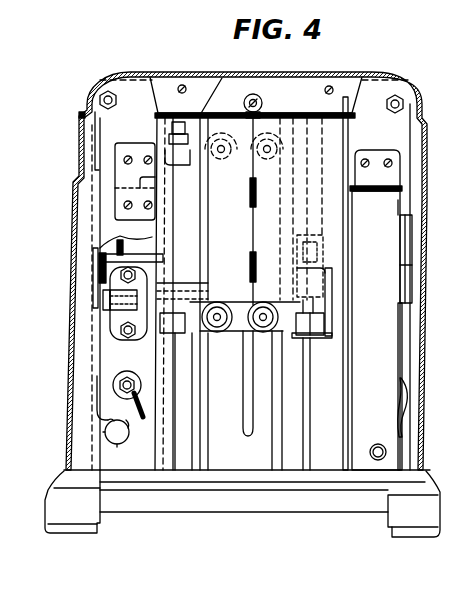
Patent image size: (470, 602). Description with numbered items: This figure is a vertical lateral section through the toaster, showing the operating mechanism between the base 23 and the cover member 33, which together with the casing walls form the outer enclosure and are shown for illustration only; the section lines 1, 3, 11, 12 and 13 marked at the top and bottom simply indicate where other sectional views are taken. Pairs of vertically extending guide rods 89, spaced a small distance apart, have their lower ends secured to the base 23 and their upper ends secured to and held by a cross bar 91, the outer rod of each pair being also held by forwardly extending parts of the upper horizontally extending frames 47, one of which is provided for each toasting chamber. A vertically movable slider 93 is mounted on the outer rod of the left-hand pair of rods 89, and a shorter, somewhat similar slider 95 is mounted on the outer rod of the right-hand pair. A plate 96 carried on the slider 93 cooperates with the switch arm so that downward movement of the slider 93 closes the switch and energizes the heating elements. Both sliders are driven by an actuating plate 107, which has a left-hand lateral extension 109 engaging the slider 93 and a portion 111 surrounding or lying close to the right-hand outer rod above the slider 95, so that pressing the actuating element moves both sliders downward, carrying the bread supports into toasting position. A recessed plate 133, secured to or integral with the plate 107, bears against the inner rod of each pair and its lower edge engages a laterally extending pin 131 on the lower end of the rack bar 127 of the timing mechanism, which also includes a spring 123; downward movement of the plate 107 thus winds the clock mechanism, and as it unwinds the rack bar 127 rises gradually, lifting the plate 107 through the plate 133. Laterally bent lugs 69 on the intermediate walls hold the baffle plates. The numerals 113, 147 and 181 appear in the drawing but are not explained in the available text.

The section line 1 is at (160, 113).
The section line 3 is at (96, 96).
The section line 11 is at (255, 116).
The section line 12 is at (334, 53).
The section line 13 is at (338, 35).
The base 23 is at (430, 483).
The cover member 33 is at (365, 75).
The upper horizontally-extending frame 47 is at (290, 81).
The laterally bent lug 69 is at (100, 248).
The guide rod 89 is at (203, 449).
The cross bar 91 is at (237, 112).
The slider 93 is at (157, 338).
The slider 95 is at (323, 338).
The plate 96 is at (92, 237).
The plate 107 is at (253, 242).
The lateral extension 109 is at (188, 332).
The portion 111 is at (330, 140).
The pulleys 113 is at (258, 160).
The spring 123 is at (414, 233).
The rack bar 127 is at (350, 144).
The laterally extending pin 131 is at (320, 303).
The recessed plate 133 is at (337, 274).
The contact 147 is at (458, 270).
The release lever 181 is at (402, 316).